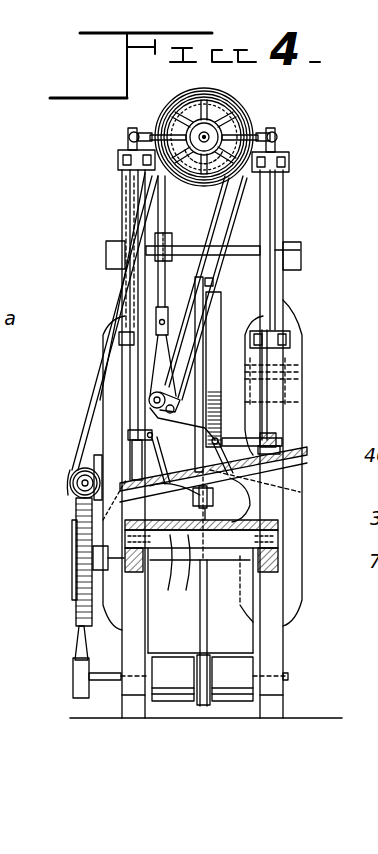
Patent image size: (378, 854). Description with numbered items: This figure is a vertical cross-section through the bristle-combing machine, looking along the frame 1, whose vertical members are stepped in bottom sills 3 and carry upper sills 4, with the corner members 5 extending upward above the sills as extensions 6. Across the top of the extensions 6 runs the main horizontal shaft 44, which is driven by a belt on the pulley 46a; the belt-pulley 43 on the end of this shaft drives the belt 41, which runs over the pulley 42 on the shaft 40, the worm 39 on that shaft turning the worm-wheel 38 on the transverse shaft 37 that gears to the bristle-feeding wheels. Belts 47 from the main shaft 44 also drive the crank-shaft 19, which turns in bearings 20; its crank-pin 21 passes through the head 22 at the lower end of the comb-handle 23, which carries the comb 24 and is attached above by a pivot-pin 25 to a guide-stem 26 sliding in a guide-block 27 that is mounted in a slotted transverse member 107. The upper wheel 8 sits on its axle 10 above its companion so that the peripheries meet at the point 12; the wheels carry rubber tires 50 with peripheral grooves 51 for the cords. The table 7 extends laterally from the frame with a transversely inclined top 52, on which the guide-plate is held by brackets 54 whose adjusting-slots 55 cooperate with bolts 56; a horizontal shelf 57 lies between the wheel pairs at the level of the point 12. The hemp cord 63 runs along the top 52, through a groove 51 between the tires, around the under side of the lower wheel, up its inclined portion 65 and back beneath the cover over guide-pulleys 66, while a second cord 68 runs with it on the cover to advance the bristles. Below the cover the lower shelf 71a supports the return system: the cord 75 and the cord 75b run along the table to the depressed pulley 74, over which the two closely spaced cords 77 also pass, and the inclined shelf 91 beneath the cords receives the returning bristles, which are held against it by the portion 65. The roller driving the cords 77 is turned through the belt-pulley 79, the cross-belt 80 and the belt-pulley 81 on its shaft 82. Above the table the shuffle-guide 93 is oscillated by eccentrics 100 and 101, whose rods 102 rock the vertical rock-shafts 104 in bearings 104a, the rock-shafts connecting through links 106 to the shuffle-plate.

The frame 1 is at (302, 352).
The bottom sills 3 is at (133, 705).
The upper sills 4 is at (108, 258).
The corner members 5 is at (122, 338).
The extensions 6 is at (120, 174).
The table 7 is at (306, 450).
The wheel 8 is at (212, 282).
The axle 10 is at (250, 372).
The point 12 is at (216, 410).
The crank-shaft 19 is at (148, 408).
The bearings 20 is at (150, 402).
The crank-pin 21 is at (155, 413).
The head 22 is at (150, 396).
The comb-handle 23 is at (122, 364).
The comb 24 is at (128, 434).
The pivot-pin 25 is at (158, 320).
The guide-stem 26 is at (128, 210).
The guide-block 27 is at (156, 236).
The shaft 37 is at (116, 560).
The worm-wheel 38 is at (78, 606).
The worm 39 is at (80, 490).
The shaft 40 is at (70, 483).
The belt 41 is at (122, 325).
The pulley 42 is at (74, 470).
The belt-pulley 43 is at (228, 126).
The main shaft 44 is at (206, 134).
The pulley 46a is at (210, 190).
The belts 47 is at (222, 232).
The tires 50 is at (204, 310).
The peripheral grooves 51 is at (212, 324).
The top 52 is at (306, 464).
The brackets 54 is at (200, 600).
The adjusting-slots 55 is at (162, 470).
The bolts 56 is at (135, 478).
The shelf 57 is at (300, 492).
The cord 63 is at (250, 497).
The upwardly-inclined portion 65 is at (210, 512).
The guide-pulleys 66 is at (212, 495).
The cord 68 is at (195, 498).
The lower shelf 71a is at (278, 528).
The pulley 74 is at (220, 705).
The cord 75 is at (270, 520).
The cord 75b is at (183, 562).
The cords 77 is at (206, 700).
The belt-pulley 79 is at (74, 580).
The cross-belt 80 is at (76, 645).
The belt-pulley 81 is at (73, 676).
The shaft 82 is at (104, 684).
The inclined shelf 91 is at (250, 650).
The shuffle-guide 93 is at (224, 464).
The eccentric 100 is at (214, 125).
The eccentric 101 is at (165, 115).
The rods 102 is at (166, 136).
The rock-shafts 104 is at (134, 146).
The bearings 104a is at (278, 442).
The links 106 is at (290, 436).
The transverse members 107 is at (292, 248).